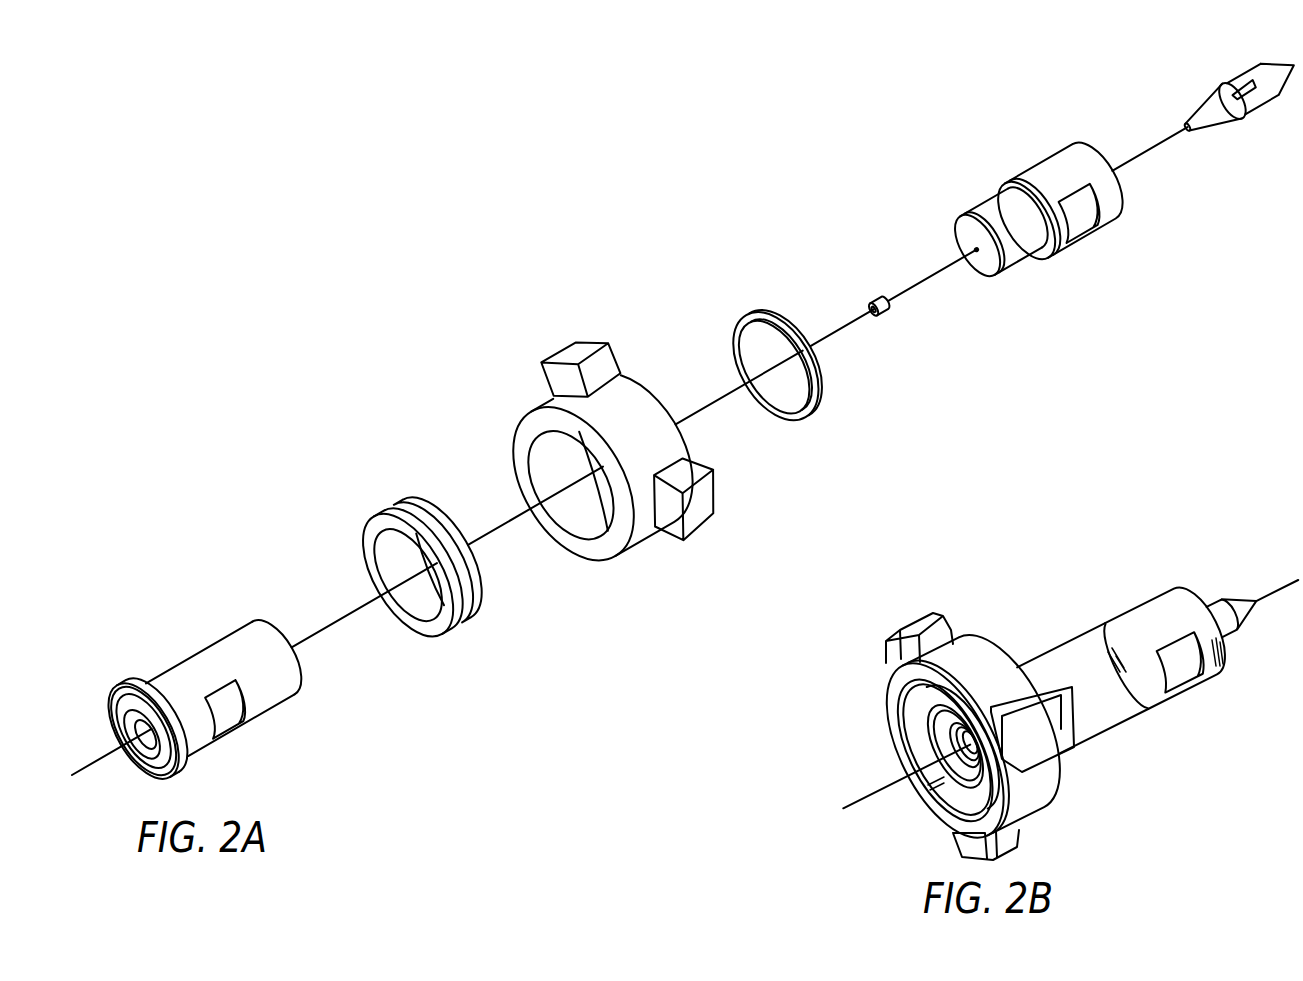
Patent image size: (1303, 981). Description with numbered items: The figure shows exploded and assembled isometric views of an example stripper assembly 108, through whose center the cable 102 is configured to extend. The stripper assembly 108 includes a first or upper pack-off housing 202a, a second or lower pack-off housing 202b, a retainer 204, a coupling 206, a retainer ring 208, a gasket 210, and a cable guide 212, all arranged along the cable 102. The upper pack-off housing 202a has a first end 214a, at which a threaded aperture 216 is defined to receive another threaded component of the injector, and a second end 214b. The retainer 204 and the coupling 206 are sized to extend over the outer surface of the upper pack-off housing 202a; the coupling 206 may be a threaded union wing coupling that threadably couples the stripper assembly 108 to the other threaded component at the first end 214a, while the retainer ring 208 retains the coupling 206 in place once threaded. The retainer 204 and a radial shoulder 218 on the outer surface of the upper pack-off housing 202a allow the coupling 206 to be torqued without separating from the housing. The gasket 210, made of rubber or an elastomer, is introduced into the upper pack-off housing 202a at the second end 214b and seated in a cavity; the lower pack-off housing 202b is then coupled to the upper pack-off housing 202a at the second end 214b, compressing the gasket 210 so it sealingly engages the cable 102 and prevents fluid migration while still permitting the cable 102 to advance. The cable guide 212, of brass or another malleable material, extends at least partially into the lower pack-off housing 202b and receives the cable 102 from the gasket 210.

In FIG. 2A, the stripper assembly 108 is at (243, 516).
In FIG. 2B, the stripper assembly 108 is at (1028, 557).
In FIG. 2A, the cable 102 is at (82, 760).
In FIG. 2B, the cable 102 is at (856, 797).
In FIG. 2A, the upper pack-off housing 202a is at (192, 683).
In FIG. 2B, the upper pack-off housing 202a is at (1020, 726).
In FIG. 2A, the lower pack-off housing 202b is at (1020, 174).
In FIG. 2B, the lower pack-off housing 202b is at (1147, 610).
In FIG. 2A, the retainer 204 is at (391, 521).
In FIG. 2A, the coupling 206 is at (592, 344).
In FIG. 2B, the coupling 206 is at (986, 658).
In FIG. 2A, the retainer ring 208 is at (760, 317).
In FIG. 2A, the gasket 210 is at (876, 298).
In FIG. 2A, the cable guide 212 is at (1222, 91).
In FIG. 2B, the cable guide 212 is at (1232, 603).
In FIG. 2A, the first end 214a is at (148, 728).
In FIG. 2A, the second end 214b is at (282, 652).
In FIG. 2A, the threaded aperture 216 is at (142, 734).
In FIG. 2B, the threaded aperture 216 is at (965, 744).
In FIG. 2A, the radial shoulder 218 is at (174, 774).